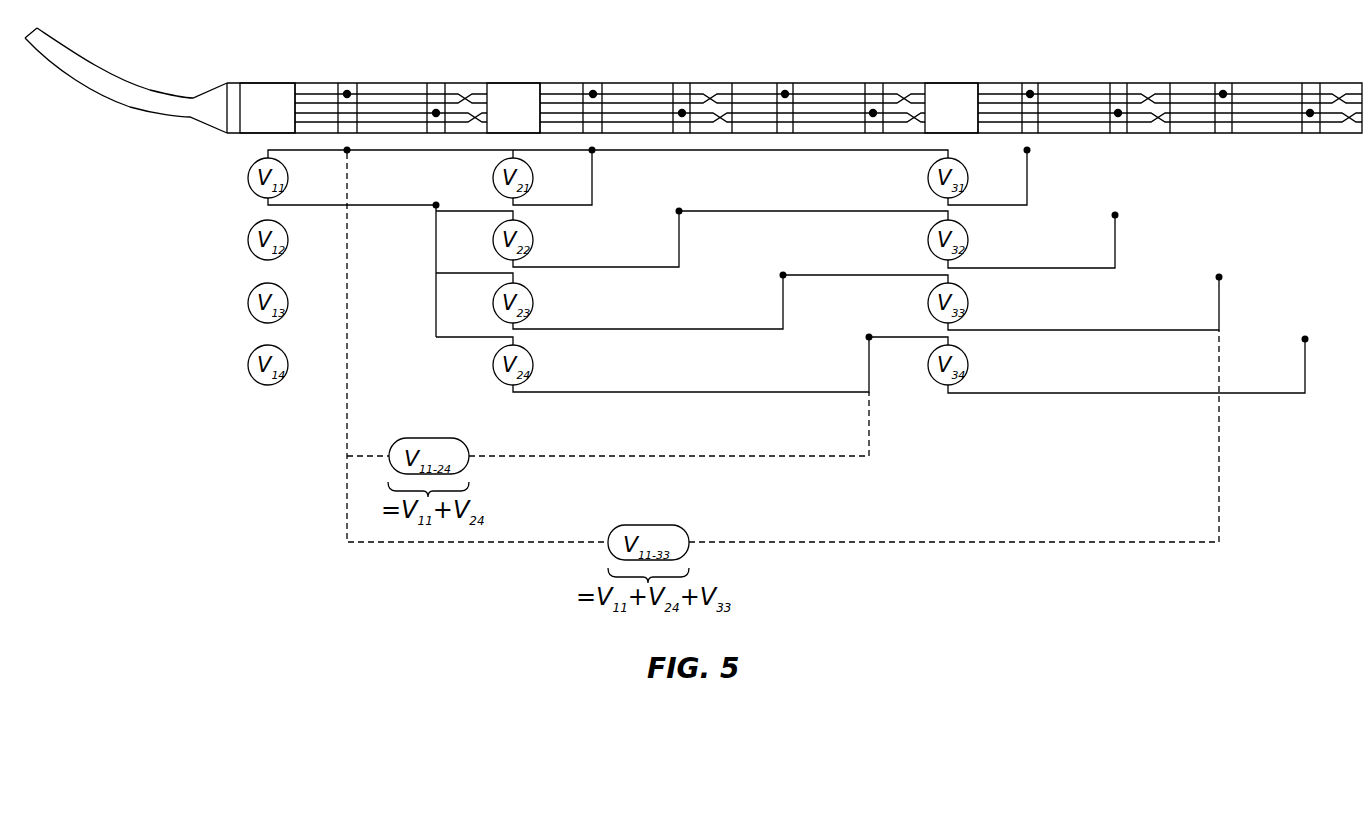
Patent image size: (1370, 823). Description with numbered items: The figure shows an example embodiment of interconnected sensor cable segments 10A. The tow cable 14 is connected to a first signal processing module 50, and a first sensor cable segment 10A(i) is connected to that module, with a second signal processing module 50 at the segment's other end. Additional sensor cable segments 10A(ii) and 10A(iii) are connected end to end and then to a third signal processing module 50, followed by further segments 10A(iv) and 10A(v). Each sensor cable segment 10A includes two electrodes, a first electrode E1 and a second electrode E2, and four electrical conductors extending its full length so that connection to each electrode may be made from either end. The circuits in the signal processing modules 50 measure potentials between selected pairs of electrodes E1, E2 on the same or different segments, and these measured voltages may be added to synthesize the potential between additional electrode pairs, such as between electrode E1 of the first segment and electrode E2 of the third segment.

The tow cable 14 is at (90, 68).
The signal processing module 50 is at (268, 82).
The first electrode E1 is at (348, 82).
The second electrode E2 is at (436, 116).
The sensor cable segment 10A is at (398, 82).